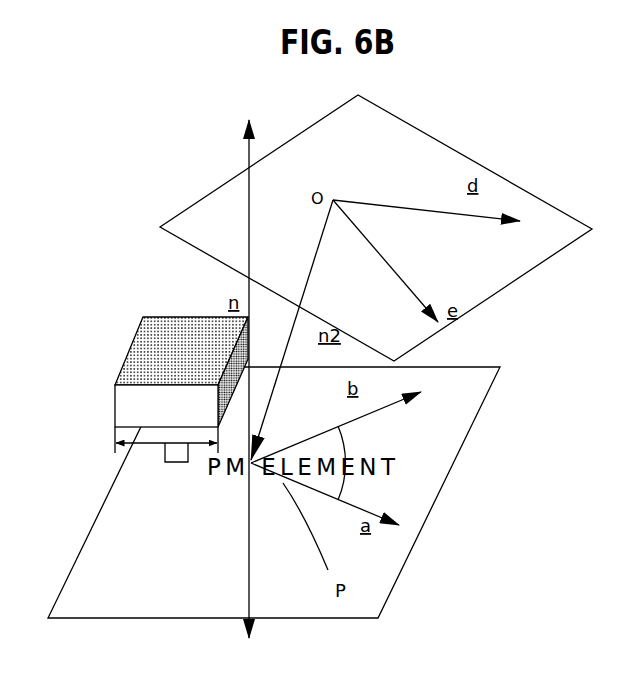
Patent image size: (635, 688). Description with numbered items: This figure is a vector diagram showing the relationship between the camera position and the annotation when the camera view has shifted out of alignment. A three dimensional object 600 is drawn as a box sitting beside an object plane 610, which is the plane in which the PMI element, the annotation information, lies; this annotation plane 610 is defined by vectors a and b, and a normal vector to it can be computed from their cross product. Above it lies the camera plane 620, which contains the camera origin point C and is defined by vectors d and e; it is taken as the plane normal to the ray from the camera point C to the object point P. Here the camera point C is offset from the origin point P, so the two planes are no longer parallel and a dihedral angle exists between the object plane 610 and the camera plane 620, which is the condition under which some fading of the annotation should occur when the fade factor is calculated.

The three dimensional object 600 is at (116, 396).
The object plane 610 is at (105, 527).
The camera plane 620 is at (180, 207).